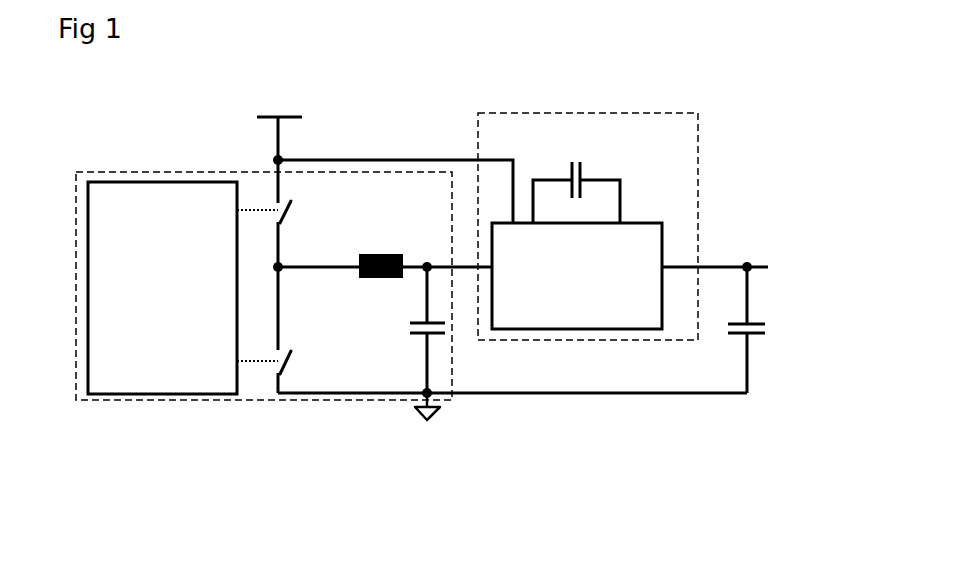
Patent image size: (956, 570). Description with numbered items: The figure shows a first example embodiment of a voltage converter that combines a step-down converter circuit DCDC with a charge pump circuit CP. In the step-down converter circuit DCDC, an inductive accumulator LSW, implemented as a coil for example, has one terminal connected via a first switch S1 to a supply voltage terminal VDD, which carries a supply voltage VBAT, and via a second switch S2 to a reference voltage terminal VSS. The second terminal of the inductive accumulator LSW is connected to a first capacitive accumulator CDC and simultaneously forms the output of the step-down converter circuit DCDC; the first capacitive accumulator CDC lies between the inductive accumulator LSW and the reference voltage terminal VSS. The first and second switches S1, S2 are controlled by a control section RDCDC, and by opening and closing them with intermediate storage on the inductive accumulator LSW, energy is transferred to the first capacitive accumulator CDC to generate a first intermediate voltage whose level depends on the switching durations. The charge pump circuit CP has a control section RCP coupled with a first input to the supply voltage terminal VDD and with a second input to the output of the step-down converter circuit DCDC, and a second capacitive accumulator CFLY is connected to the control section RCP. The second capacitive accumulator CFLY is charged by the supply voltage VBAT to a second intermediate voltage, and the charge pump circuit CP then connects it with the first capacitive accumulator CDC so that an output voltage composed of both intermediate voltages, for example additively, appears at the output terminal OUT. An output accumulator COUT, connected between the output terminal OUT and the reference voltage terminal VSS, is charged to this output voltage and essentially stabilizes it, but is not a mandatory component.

The step-down converter circuit DCDC is at (263, 402).
The control section of the step-down converter circuit RDCDC is at (183, 288).
The supply voltage VBAT is at (281, 120).
The supply voltage terminal VDD is at (300, 117).
The first switch S1 is at (295, 210).
The second switch S2 is at (292, 352).
The inductive accumulator LSW is at (380, 253).
The first capacitive accumulator CDC is at (418, 329).
The reference voltage terminal VSS is at (437, 410).
The charge pump circuit CP is at (588, 342).
The control section of the charge pump circuit RCP is at (577, 276).
The second capacitive accumulator CFLY is at (582, 165).
The output terminal OUT is at (748, 263).
The output accumulator COUT is at (733, 338).